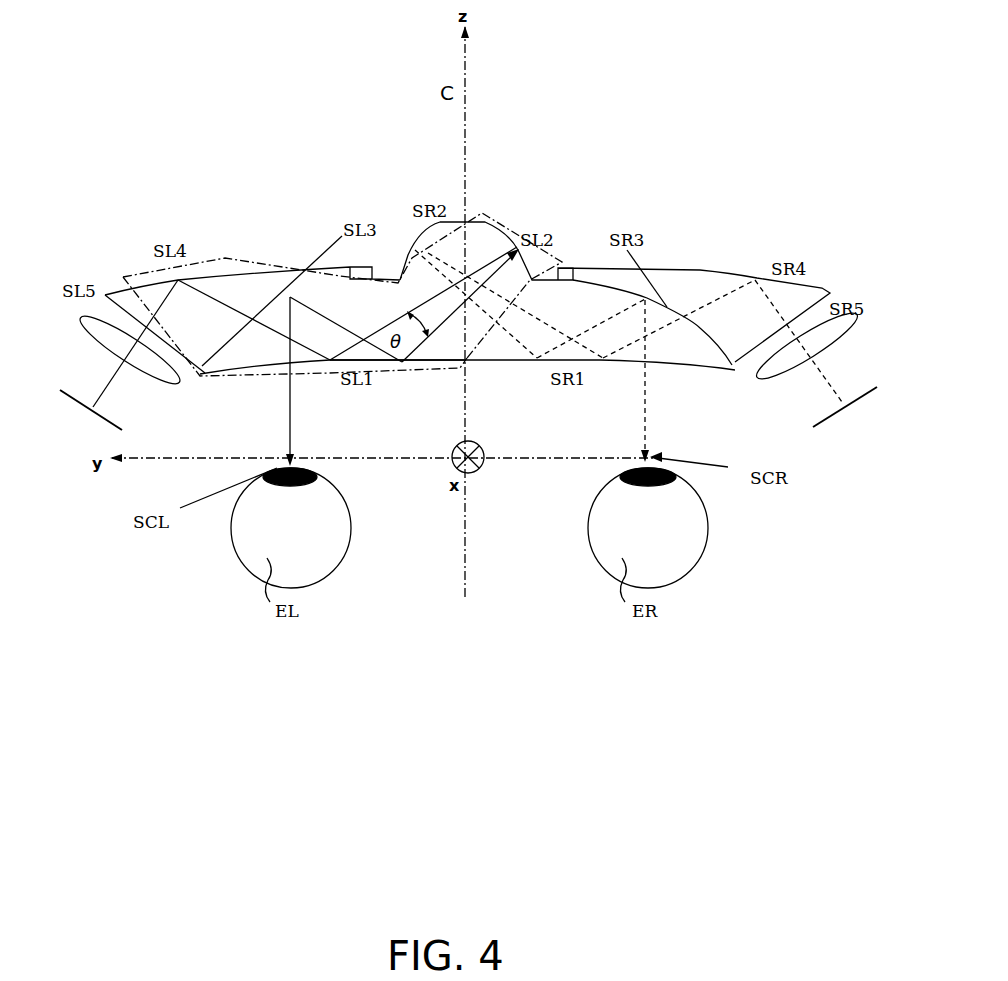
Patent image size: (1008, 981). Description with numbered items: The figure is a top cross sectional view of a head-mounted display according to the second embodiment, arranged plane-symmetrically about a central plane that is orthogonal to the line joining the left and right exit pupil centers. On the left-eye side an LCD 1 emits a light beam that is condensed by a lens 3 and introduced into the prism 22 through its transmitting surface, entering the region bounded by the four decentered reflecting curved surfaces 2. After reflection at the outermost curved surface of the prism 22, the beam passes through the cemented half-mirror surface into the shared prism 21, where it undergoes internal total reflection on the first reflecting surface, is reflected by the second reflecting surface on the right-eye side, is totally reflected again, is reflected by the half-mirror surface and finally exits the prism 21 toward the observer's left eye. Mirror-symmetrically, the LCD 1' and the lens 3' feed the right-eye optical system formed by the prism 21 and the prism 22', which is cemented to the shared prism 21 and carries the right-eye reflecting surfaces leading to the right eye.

The LCD 1 is at (74, 410).
The LCD 1' is at (858, 407).
The decentered reflecting curved surfaces 2 is at (134, 263).
The lens 3 is at (98, 350).
The lens 3' is at (834, 342).
The prism 21 is at (406, 368).
The prism 22 is at (331, 292).
The prism 22' is at (648, 289).